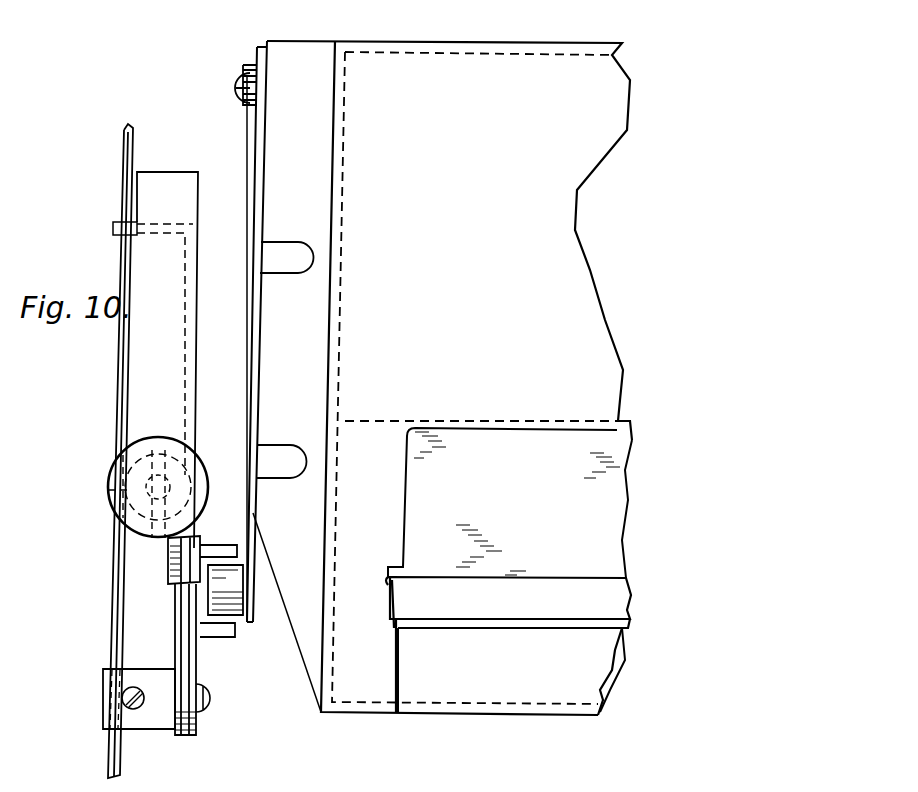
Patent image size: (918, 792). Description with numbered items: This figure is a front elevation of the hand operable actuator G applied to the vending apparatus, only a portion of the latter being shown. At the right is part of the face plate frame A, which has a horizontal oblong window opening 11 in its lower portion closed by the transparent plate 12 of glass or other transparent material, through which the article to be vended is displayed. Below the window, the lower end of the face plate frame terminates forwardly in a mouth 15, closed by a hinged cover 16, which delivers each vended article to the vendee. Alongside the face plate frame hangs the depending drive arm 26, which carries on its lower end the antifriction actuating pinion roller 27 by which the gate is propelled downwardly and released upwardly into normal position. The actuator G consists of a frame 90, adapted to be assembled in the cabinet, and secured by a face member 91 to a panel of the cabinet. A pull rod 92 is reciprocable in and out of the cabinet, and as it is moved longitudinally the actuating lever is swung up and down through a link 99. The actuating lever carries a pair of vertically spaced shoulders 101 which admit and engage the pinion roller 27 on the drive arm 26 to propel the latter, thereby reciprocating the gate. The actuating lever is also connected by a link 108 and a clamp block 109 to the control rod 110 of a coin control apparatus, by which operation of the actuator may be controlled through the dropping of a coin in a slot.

The face plate frame A is at (393, 40).
The window opening 11 is at (497, 428).
The transparent plate 12 is at (510, 503).
The mouth 15 is at (511, 670).
The hinged cover 16 is at (508, 644).
The drive arm 26 is at (262, 198).
The antifriction actuating pinion roller 27 is at (238, 580).
The frame 90 is at (198, 331).
The face member 91 is at (165, 349).
The pull rod 92 is at (108, 490).
The link 99 is at (166, 530).
The shoulders 101 is at (213, 546).
The link 108 is at (195, 670).
The clamp block 109 is at (150, 728).
The control rod 110 is at (133, 153).
The manually operable actuator G is at (140, 403).